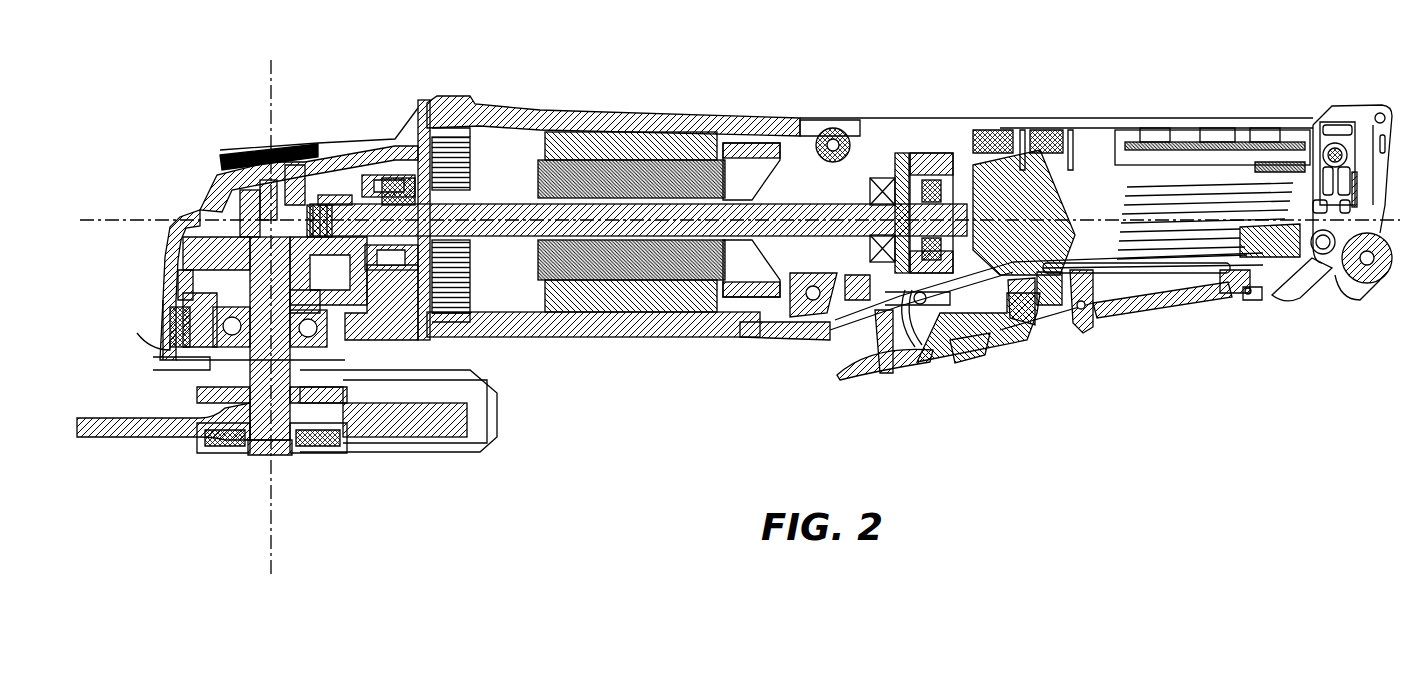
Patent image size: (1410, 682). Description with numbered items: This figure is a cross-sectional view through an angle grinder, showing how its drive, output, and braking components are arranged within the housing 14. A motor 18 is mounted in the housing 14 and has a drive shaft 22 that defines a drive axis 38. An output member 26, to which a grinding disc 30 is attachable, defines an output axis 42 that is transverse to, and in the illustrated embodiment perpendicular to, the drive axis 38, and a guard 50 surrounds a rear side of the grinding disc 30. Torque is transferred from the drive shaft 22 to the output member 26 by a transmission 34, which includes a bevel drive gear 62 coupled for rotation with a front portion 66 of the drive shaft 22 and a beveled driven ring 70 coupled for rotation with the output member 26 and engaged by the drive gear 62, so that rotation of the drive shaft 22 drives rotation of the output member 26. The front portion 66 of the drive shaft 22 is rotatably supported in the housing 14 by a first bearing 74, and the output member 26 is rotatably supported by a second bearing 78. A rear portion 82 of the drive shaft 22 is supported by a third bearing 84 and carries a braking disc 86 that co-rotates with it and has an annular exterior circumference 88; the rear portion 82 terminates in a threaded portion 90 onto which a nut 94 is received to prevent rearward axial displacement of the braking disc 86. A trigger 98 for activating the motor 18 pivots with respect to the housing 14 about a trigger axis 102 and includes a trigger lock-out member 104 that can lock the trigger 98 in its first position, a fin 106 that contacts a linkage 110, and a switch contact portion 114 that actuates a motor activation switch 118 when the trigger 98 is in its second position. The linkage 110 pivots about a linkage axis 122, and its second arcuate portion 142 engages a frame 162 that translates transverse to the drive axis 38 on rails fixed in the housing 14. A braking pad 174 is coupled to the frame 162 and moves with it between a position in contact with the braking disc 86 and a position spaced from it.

The housing 14 is at (500, 105).
The motor 18 is at (650, 266).
The drive shaft 22 is at (600, 196).
The output member 26 is at (262, 457).
The grinding disc 30 is at (120, 440).
The transmission 34 is at (233, 262).
The drive axis 38 is at (130, 219).
The output axis 42 is at (274, 503).
The guard 50 is at (490, 440).
The bevel drive gear 62 is at (337, 192).
The front portion of the drive shaft 66 is at (395, 150).
The beveled driven ring 70 is at (340, 256).
The first bearing 74 is at (372, 307).
The second bearing 78 is at (175, 326).
The rear portion of the drive shaft 82 is at (878, 206).
The third bearing 84 is at (885, 265).
The braking disc 86 is at (1060, 130).
The annular exterior circumference 88 is at (960, 206).
The threaded portion 90 is at (1022, 352).
The nut 94 is at (1050, 323).
The trigger 98 is at (970, 345).
The trigger axis 102 is at (1265, 295).
The trigger lock-out member 104 is at (1113, 328).
The fin 106 is at (963, 345).
The linkage 110 is at (915, 310).
The switch contact portion 114 is at (1083, 333).
The motor activation switch 118 is at (1155, 130).
The linkage axis 122 is at (920, 300).
The second arcuate portion 142 is at (925, 300).
The frame 162 is at (902, 205).
The braking pad 174 is at (958, 166).